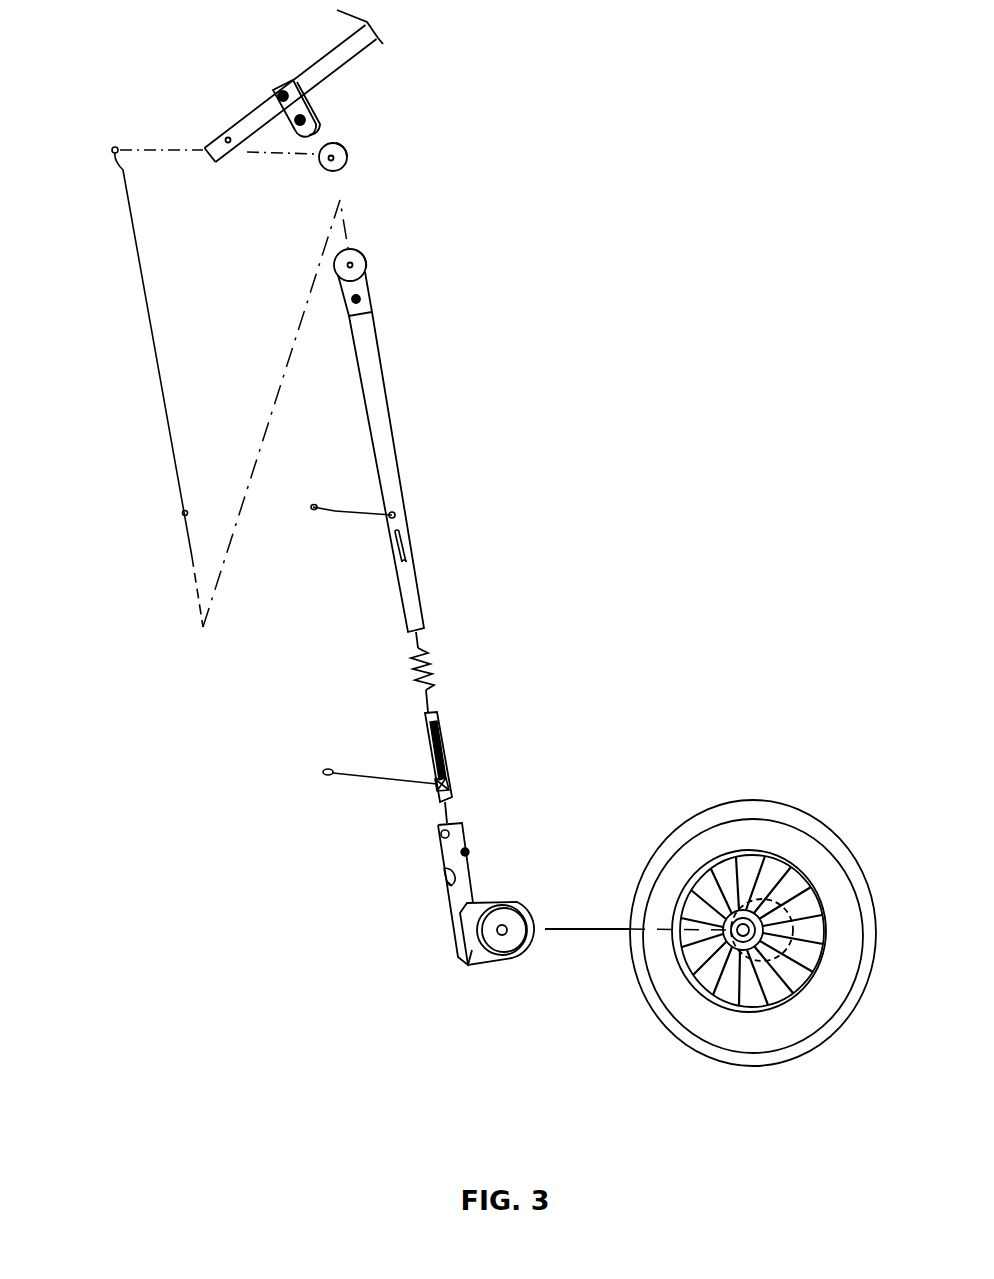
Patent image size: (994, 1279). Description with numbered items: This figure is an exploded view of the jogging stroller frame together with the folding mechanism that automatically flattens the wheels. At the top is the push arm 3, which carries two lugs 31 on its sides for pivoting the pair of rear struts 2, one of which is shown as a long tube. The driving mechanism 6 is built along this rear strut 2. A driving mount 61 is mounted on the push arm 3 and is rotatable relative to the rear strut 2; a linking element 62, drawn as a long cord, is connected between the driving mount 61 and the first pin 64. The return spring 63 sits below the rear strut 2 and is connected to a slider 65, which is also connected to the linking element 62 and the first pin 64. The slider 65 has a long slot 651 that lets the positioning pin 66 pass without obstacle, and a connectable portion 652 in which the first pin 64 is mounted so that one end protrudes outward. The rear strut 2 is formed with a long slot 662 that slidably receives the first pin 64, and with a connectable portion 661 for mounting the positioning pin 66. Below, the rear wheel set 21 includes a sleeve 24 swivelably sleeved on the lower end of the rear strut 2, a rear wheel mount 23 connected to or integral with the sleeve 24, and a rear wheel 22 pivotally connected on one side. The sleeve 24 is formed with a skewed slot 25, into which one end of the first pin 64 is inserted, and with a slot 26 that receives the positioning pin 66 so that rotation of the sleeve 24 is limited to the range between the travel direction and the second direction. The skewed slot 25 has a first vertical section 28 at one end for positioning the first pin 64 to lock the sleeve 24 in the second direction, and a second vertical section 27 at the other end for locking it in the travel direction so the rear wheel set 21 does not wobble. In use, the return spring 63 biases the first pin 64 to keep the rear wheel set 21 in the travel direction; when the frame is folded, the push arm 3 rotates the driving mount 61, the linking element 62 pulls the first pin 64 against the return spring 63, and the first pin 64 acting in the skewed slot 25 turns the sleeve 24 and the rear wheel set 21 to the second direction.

The rear strut 2 is at (380, 425).
The push arm 3 is at (247, 127).
The lug 31 is at (327, 115).
The driving mechanism 6 is at (523, 222).
The driving mount 61 is at (348, 165).
The linking element 62 is at (175, 475).
The return spring 63 is at (428, 673).
The first pin 64 is at (322, 772).
The slider 65 is at (445, 764).
The long slot 651 is at (430, 750).
The connectable portion 652 is at (455, 788).
The positioning pin 66 is at (315, 505).
The connectable portion 661 is at (405, 512).
The long slot 662 is at (392, 555).
The rear wheel set 21 is at (582, 742).
The rear wheel 22 is at (702, 1045).
The rear wheel mount 23 is at (473, 948).
The sleeve 24 is at (502, 885).
The skewed slot 25 is at (447, 875).
The slot 26 is at (440, 837).
The second vertical section 27 is at (448, 882).
The first vertical section 28 is at (468, 852).